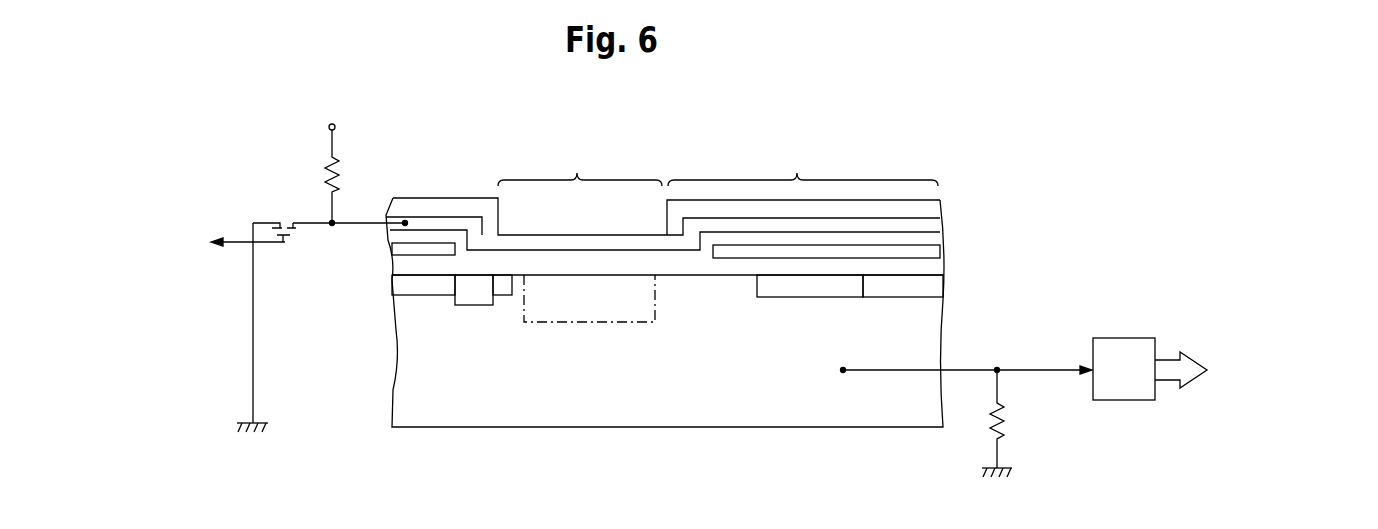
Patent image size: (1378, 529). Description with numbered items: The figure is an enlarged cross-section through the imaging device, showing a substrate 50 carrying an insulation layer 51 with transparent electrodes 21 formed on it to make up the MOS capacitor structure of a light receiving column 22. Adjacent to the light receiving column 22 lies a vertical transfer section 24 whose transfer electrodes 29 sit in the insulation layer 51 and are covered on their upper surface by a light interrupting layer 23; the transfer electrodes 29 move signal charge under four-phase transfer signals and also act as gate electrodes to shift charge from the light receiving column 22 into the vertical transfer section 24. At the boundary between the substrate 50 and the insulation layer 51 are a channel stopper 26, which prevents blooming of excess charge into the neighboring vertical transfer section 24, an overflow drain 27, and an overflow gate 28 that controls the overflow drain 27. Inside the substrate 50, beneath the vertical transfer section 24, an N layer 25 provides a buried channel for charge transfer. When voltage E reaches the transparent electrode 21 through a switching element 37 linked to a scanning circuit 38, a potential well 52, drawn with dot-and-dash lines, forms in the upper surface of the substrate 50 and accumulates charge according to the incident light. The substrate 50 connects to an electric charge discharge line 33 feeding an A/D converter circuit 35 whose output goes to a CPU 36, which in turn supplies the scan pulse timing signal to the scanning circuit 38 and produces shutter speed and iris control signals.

The transparent electrode 21 is at (930, 228).
The light receiving column 22 is at (580, 164).
The light interrupting layer 23 is at (503, 199).
The vertical transfer section 24 is at (803, 164).
The N layer 25 is at (775, 287).
The channel stopper 26 is at (448, 287).
The overflow drain 27 is at (483, 305).
The overflow gate 28 is at (513, 295).
The transfer electrode 29 is at (392, 248).
The electric charge discharge line 33 is at (1043, 368).
The A/D converter circuit 35 is at (1113, 390).
The CPU 36 is at (1255, 370).
The switching element 37 is at (298, 232).
The scanning circuit 38 is at (166, 246).
The substrate 50 is at (925, 335).
The insulation layer 51 is at (930, 268).
The potential well 52 is at (658, 325).